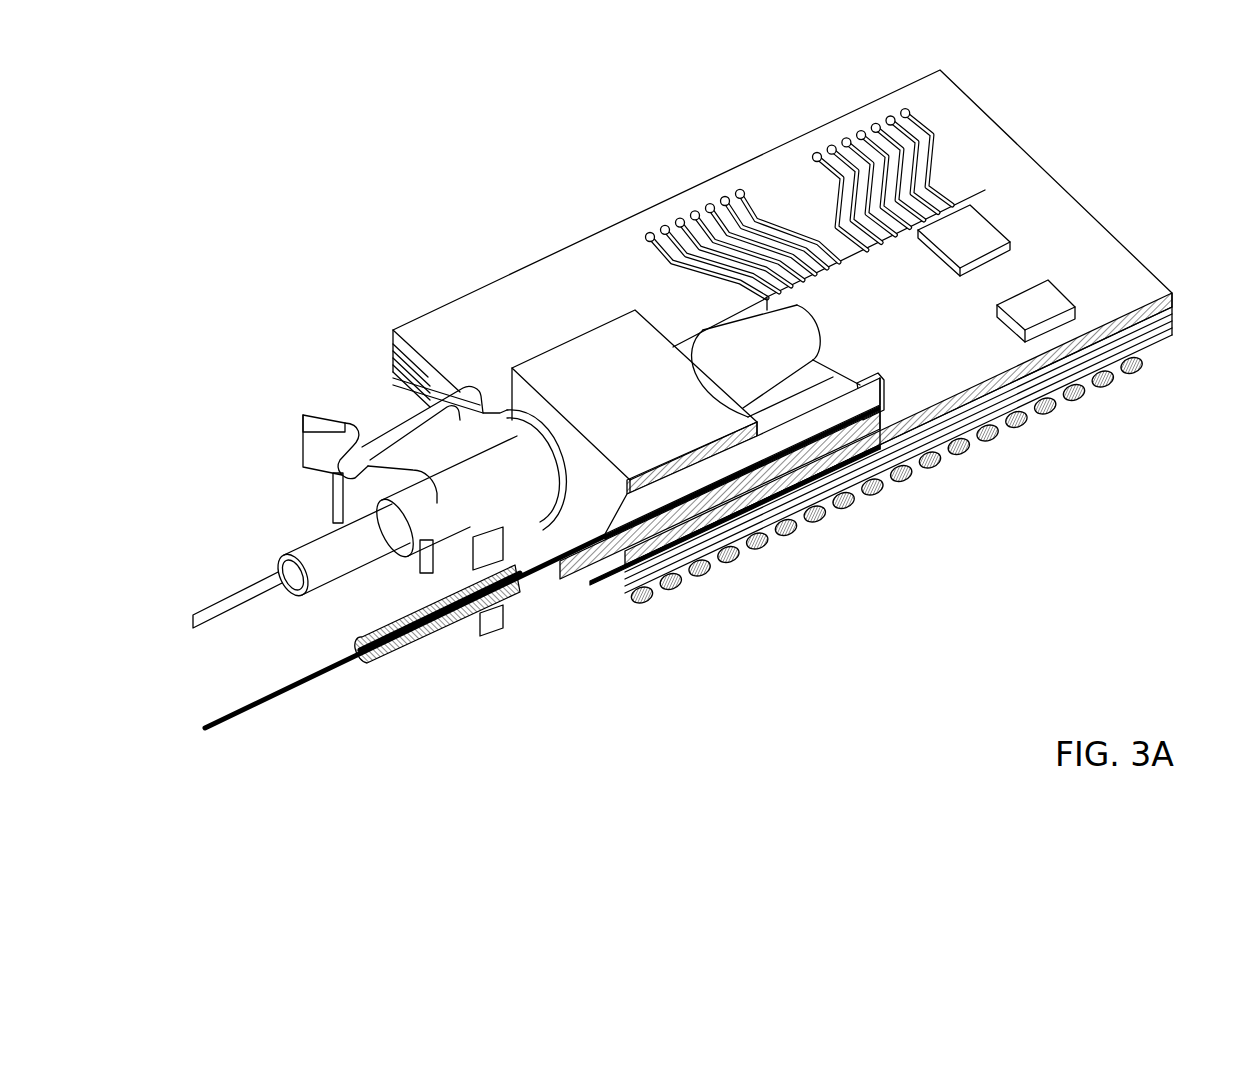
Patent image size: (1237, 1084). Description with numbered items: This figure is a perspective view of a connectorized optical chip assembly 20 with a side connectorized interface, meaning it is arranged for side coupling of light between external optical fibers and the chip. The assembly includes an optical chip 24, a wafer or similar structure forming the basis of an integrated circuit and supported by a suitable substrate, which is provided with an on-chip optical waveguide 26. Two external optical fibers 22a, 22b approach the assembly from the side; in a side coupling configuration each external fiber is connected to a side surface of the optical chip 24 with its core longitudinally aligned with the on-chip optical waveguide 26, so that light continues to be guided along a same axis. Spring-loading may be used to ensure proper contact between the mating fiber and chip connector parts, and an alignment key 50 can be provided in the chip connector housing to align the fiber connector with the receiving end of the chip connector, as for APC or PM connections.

The connectorized optical chip assembly 20 is at (835, 534).
The external optical fiber 22a is at (230, 597).
The external optical fiber 22b is at (267, 692).
The optical chip 24 is at (1087, 320).
The on-chip optical waveguide 26 is at (814, 322).
The alignment key 50 is at (540, 500).